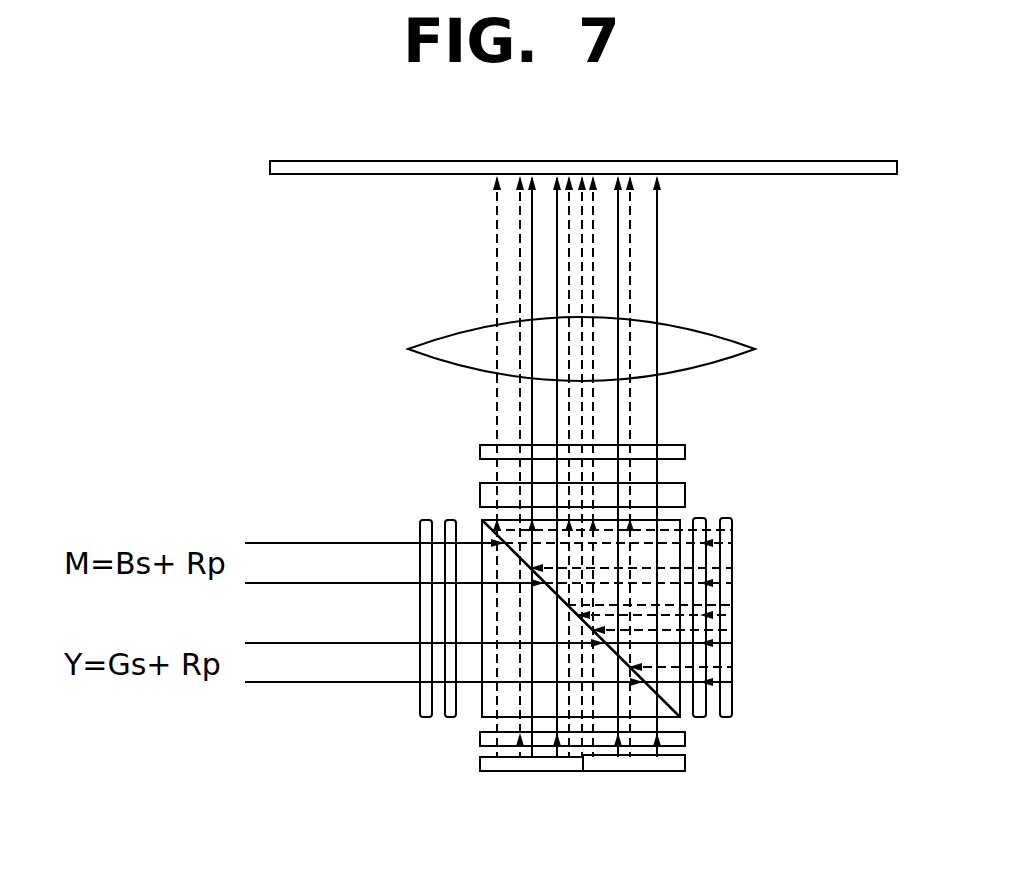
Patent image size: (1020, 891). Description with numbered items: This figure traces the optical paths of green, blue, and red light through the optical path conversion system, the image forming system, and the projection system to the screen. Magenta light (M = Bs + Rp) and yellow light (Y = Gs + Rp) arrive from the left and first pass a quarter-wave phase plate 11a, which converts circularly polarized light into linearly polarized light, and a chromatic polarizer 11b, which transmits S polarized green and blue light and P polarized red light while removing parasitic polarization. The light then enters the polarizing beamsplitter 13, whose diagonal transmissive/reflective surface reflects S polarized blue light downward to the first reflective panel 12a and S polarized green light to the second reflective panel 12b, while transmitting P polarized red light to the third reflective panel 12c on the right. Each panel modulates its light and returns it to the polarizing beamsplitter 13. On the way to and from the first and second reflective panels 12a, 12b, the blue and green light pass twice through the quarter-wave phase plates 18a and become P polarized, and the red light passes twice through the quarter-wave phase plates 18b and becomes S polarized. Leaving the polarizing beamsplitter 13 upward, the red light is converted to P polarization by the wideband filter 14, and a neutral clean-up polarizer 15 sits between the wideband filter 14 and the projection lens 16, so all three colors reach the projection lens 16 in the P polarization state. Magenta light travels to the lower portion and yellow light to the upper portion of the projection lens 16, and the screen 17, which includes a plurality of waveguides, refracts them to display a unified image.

The λ/4 phase plate 11a is at (420, 520).
The chromatic polarizer 11b is at (450, 518).
The first reflective panel 12a is at (532, 771).
The second reflective panel 12b is at (640, 771).
The third reflective panel 12c is at (732, 710).
The polarizing beamsplitter 13 is at (487, 710).
The wideband filter 14 is at (685, 495).
The neutral clean-up polarizer 15 is at (685, 452).
The projection lens 16 is at (408, 349).
The screen 17 is at (857, 175).
The λ/4 phase plates 18a is at (480, 740).
The λ/4 phase plates 18b is at (700, 717).